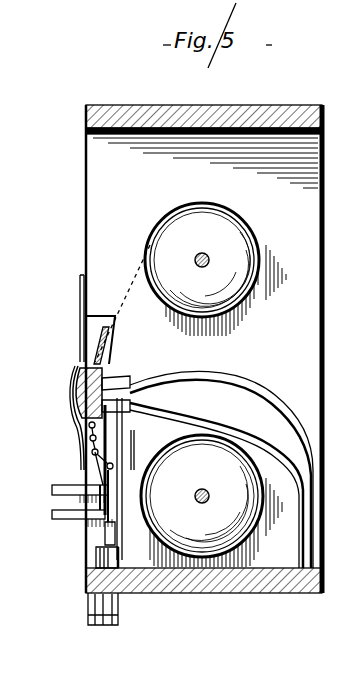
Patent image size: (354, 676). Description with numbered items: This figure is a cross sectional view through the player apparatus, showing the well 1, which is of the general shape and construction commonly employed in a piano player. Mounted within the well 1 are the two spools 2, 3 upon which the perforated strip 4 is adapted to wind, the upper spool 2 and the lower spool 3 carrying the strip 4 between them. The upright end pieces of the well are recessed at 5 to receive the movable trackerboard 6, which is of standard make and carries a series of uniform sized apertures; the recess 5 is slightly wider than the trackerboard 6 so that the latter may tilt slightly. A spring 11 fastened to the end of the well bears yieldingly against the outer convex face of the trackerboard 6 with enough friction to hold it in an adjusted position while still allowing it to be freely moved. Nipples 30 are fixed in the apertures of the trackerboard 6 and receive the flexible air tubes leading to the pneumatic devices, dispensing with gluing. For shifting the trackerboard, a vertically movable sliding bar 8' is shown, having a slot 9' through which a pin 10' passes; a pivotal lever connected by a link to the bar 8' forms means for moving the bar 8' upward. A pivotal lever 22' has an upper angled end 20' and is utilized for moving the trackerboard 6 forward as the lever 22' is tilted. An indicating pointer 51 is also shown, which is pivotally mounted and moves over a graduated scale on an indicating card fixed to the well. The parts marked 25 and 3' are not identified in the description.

The well 1 is at (204, 365).
The spool 2 is at (250, 290).
The spool 3 is at (211, 501).
The perforated strip 4 is at (120, 272).
The recess 5 is at (110, 366).
The trackerboard 6 is at (78, 383).
The vertically movable sliding bar 8' is at (80, 453).
The slot 9' is at (132, 479).
The pin 10' is at (130, 460).
The spring 11 is at (78, 410).
The upper angled end 20' is at (216, 454).
The pivotal lever 22' is at (77, 538).
The block 25 is at (108, 555).
The nipple 30 is at (118, 380).
The indicating pointer 51 is at (188, 408).
The bracket 3' is at (73, 498).